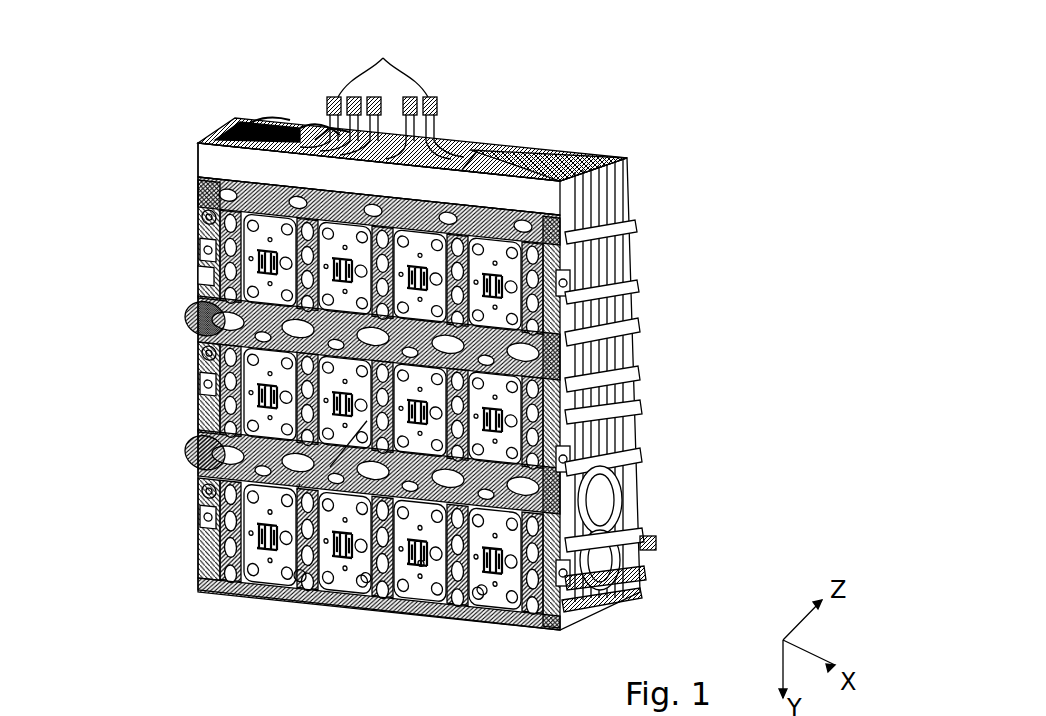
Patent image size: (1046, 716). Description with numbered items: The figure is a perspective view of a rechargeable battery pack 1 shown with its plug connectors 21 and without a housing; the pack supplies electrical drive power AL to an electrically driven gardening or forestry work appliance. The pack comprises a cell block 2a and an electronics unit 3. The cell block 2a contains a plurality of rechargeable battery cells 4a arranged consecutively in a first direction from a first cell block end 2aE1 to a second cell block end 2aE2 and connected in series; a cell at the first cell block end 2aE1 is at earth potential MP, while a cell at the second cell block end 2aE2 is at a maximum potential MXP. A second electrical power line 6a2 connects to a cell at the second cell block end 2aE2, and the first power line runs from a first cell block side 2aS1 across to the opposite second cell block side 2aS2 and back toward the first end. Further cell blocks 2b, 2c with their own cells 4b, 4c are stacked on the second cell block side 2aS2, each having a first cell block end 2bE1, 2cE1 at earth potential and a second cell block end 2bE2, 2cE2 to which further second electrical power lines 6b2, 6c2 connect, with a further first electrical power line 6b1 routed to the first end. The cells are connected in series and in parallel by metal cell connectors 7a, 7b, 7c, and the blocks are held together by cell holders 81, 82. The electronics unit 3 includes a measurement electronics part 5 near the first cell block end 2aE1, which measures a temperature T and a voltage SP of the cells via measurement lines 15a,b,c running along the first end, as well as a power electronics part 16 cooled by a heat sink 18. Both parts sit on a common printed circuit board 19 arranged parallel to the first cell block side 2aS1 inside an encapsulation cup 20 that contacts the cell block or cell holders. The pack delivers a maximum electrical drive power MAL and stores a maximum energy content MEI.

The rechargeable battery pack 1 is at (110, 75).
The cell block 2a is at (217, 227).
The further cell block 2b is at (217, 362).
The further cell block 2c is at (213, 497).
The first cell block end 2aE1 is at (200, 247).
The second cell block end 2aE2 is at (562, 284).
The first cell block end 2bE1 is at (200, 380).
The second cell block end 2bE2 is at (558, 460).
The first cell block end 2cE1 is at (200, 513).
The second cell block end 2cE2 is at (592, 570).
The first cell block side 2aS1 is at (478, 150).
The second cell block side 2aS2 is at (297, 490).
The electronics unit 3 is at (300, 130).
The rechargeable battery cells 4a is at (203, 203).
The rechargeable battery cells 4b is at (203, 350).
The rechargeable battery cells 4c is at (207, 480).
The measurement electronics part 5 is at (255, 118).
The second electrical power line 6a2 is at (578, 298).
The further first electrical power line 6b1 is at (600, 384).
The further second electrical power line 6b2 is at (565, 420).
The further second electrical power line 6c2 is at (625, 542).
The cell connector 7a is at (500, 264).
The cell connector 7b is at (565, 482).
The cell connector 7c is at (512, 612).
The measurement lines 15a,b,c is at (248, 133).
The power electronics part 16 is at (500, 150).
The heat sink 18 is at (565, 157).
The common printed circuit board 19 is at (322, 140).
The encapsulation cup 20 is at (527, 207).
The plug connectors 21 is at (333, 97).
The electrical drive power AL is at (383, 58).
The earth potential MP is at (193, 270).
The maximum potential MXP is at (585, 340).
The maximum electrical drive power MAL is at (300, 594).
The maximum energy content MEI is at (366, 596).
The temperature T is at (421, 604).
The voltage SP is at (482, 614).
The cell holder 81 is at (592, 604).
The cell holder 82 is at (642, 576).